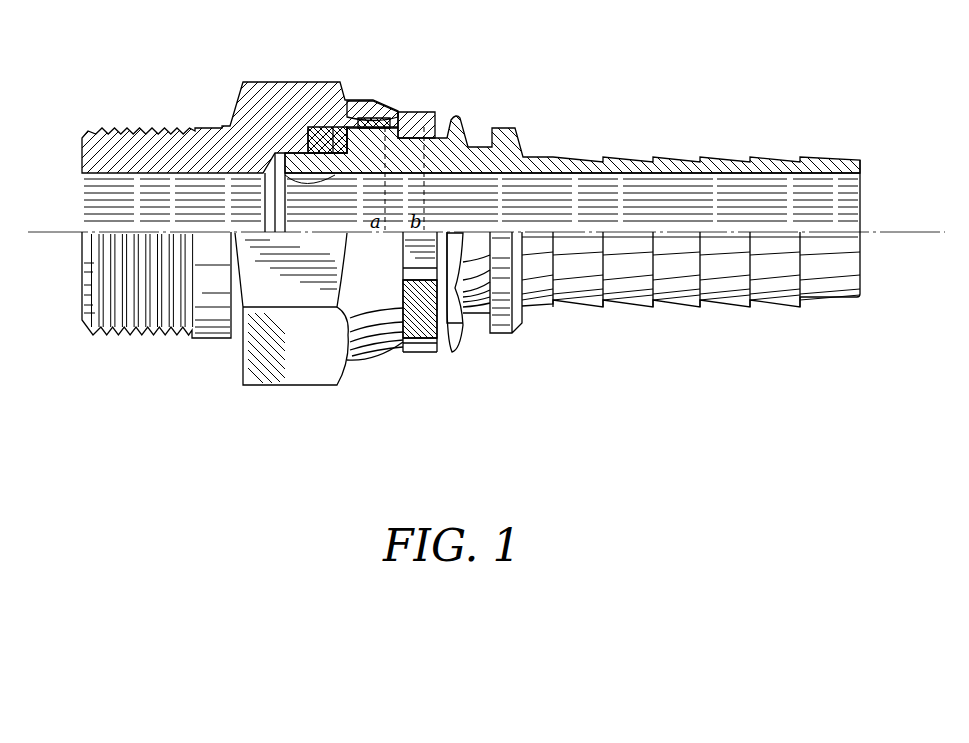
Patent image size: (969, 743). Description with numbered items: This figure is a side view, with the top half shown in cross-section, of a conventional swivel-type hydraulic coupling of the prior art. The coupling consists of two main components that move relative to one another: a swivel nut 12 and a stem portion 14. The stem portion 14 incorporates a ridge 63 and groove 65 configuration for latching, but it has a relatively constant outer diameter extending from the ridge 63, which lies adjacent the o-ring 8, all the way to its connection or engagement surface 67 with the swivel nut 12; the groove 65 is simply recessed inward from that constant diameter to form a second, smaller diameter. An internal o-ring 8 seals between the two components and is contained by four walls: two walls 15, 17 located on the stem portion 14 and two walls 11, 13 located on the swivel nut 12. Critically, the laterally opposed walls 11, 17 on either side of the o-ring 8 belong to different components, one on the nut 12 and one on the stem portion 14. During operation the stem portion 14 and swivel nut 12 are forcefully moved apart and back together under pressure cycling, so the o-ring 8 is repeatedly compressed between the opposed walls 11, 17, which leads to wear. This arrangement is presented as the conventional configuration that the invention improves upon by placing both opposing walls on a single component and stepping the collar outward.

The o-ring 8 is at (340, 148).
The wall 11 is at (307, 140).
The swivel nut 12 is at (95, 157).
The wall 13 is at (345, 98).
The stem portion 14 is at (553, 156).
The wall 15 is at (264, 178).
The wall 17 is at (377, 102).
The ridge 63 is at (386, 125).
The groove 65 is at (436, 137).
The engagement surface 67 is at (427, 118).